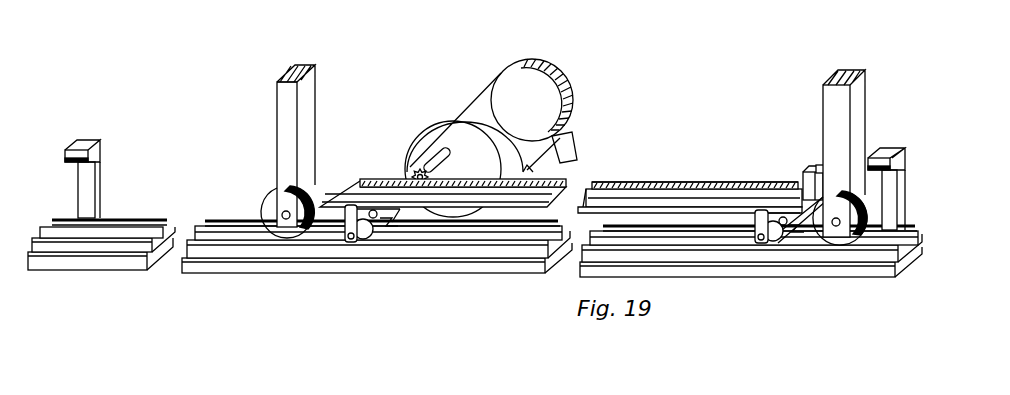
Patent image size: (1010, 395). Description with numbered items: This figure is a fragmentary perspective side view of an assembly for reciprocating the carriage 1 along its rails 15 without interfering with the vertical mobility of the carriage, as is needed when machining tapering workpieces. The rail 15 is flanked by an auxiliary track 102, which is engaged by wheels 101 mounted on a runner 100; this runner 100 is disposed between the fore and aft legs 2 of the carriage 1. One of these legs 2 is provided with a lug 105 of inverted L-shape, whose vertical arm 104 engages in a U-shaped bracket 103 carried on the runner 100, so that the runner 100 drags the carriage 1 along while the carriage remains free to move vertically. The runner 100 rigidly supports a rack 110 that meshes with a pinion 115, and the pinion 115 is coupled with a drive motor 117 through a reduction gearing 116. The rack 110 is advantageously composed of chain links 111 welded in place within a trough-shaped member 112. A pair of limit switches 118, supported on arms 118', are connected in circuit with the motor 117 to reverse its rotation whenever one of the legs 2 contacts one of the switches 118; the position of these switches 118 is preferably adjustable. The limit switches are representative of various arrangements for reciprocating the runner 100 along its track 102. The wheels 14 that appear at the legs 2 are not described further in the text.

The carriage 1 is at (265, 77).
The leg 2 is at (292, 115).
The roller wheel 14 is at (268, 213).
The rail 15 is at (165, 256).
The runner 100 is at (343, 197).
The wheel 101 is at (382, 227).
The auxiliary track 102 is at (125, 244).
The U-shaped bracket 103 is at (823, 185).
The vertical arm 104 is at (800, 175).
The lug 105 is at (817, 168).
The rack 110 is at (637, 172).
The chain link 111 is at (603, 179).
The trough-shaped member 112 is at (735, 197).
The pinion 115 is at (419, 175).
The reduction gearing 116 is at (468, 155).
The drive motor 117 is at (500, 112).
The limit switch 118 is at (502, 140).
The arm 118' is at (527, 170).